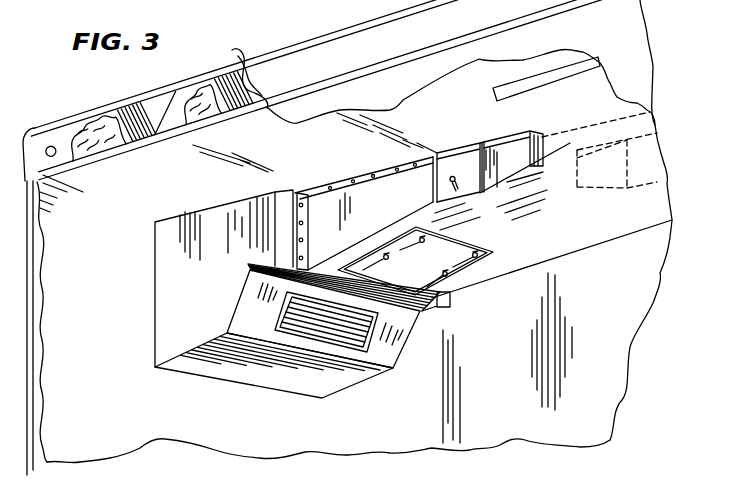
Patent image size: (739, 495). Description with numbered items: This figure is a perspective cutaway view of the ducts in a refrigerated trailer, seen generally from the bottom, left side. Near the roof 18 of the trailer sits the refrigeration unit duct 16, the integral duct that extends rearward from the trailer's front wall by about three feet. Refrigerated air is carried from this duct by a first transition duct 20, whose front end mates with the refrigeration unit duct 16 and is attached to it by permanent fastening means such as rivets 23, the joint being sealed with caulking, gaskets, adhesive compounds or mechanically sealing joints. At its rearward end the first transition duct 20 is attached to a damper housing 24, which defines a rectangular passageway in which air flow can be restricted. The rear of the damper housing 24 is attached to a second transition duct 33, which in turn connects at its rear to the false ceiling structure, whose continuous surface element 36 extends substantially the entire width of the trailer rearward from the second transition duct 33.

The refrigeration unit duct 16 is at (358, 373).
The roof 18 is at (248, 79).
The first transition duct 20 is at (503, 243).
The rivets 23 is at (496, 143).
The damper housing 24 is at (545, 220).
The second transition duct 33 is at (583, 205).
The continuous surface element 36 is at (655, 205).